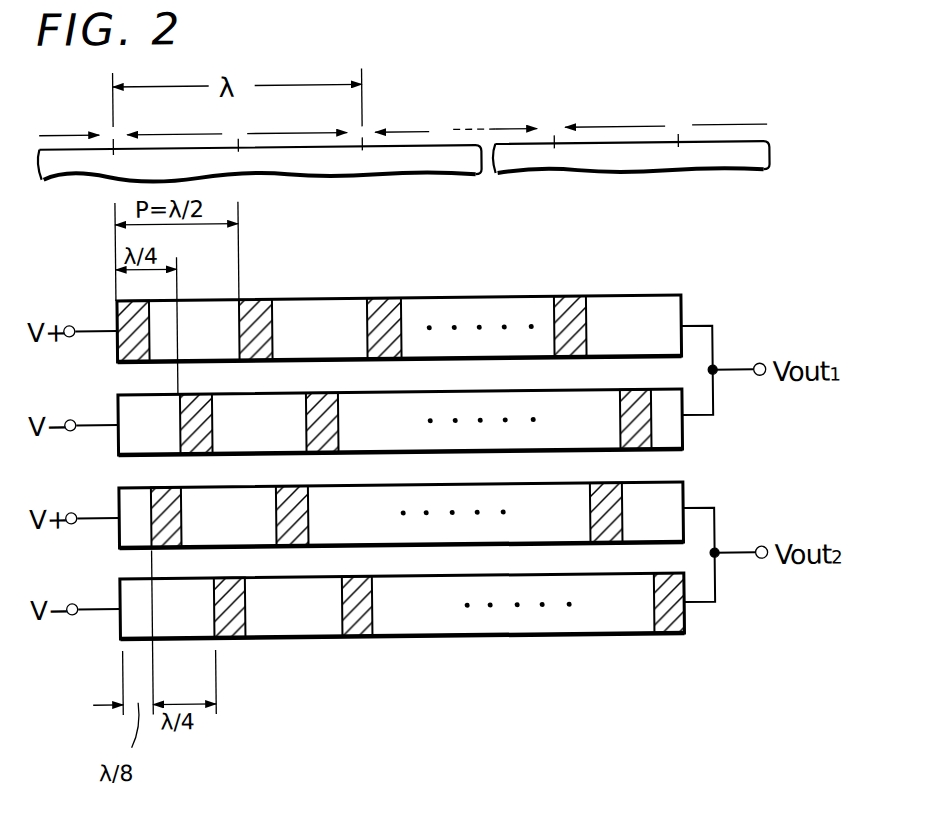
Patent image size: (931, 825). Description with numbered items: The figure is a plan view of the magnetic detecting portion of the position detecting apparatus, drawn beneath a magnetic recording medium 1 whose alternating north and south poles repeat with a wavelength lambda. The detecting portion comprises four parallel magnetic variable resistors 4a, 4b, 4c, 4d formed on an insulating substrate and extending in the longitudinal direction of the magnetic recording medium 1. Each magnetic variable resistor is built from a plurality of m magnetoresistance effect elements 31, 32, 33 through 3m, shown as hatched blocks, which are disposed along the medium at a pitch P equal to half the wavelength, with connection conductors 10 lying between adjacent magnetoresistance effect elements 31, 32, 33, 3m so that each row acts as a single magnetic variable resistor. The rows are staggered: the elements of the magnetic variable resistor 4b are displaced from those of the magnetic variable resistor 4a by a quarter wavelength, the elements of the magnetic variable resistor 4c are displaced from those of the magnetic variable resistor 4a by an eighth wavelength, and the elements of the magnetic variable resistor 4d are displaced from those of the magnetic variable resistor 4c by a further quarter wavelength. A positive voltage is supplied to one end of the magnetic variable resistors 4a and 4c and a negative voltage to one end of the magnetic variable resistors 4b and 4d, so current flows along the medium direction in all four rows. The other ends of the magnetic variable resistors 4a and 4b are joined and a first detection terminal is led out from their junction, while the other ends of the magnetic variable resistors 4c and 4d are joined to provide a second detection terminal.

The magnetic recording medium 1 is at (640, 177).
The connection conductors 10 is at (217, 310).
The magnetic variable resistor 4a is at (667, 308).
The magnetic variable resistor 4b is at (667, 435).
The magnetic variable resistor 4c is at (670, 494).
The magnetic variable resistor 4d is at (545, 627).
The magnetoresistance effect element 31 is at (238, 658).
The magnetoresistance effect element 32 is at (258, 345).
The magnetoresistance effect element 33 is at (382, 348).
The magnetoresistance effect element 3m is at (573, 350).